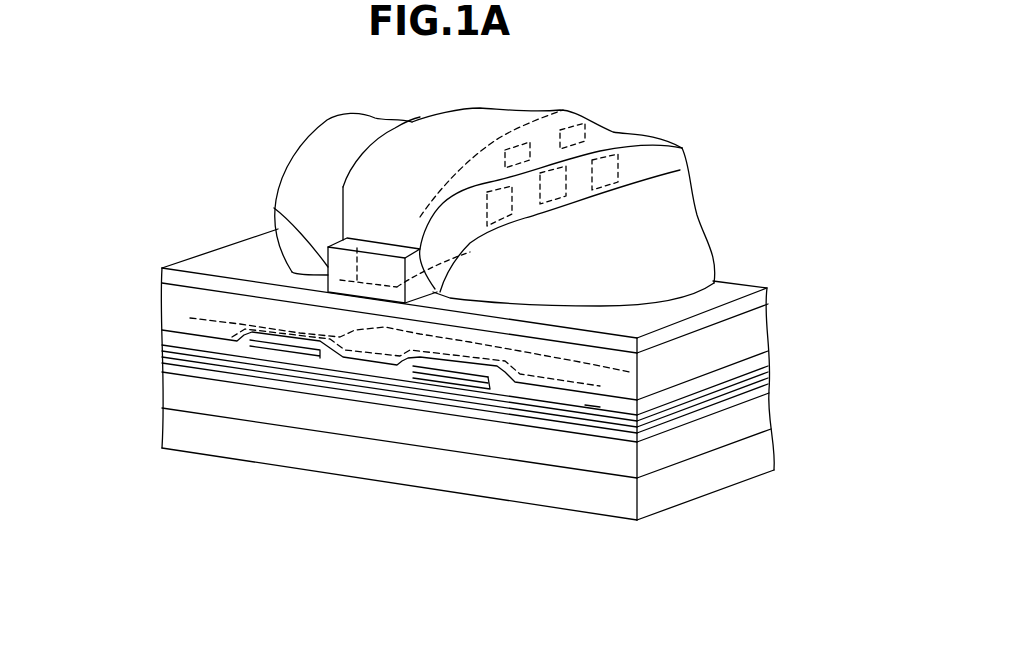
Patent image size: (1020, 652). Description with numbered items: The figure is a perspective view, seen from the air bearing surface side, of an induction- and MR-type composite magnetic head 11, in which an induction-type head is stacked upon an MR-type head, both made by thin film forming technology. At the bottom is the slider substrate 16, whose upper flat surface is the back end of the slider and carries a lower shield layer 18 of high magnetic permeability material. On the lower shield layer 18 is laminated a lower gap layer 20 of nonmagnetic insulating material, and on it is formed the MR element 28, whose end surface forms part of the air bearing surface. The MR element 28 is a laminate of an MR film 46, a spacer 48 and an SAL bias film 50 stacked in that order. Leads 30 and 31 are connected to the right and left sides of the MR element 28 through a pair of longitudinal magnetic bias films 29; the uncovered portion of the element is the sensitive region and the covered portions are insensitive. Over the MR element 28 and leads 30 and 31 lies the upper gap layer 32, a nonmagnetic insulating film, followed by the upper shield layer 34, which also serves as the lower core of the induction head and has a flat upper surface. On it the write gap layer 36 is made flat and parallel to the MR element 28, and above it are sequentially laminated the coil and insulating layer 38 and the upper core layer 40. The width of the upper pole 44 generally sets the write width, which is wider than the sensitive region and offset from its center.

The induction- and MR-type composite magnetic head 11 is at (692, 101).
The slider substrate 16 is at (185, 432).
The lower shield layer 18 is at (180, 393).
The lower gap layer 20 is at (162, 365).
The MR element 28 is at (348, 537).
The longitudinal magnetic bias films 29 is at (275, 372).
The lead 30 is at (590, 413).
The lead 31 is at (177, 341).
The upper gap layer 32 is at (177, 308).
The upper shield layer (upper shield—lower core layer) 34 is at (175, 283).
The write gap layer 36 is at (217, 282).
The coil and insulating layer 38 is at (627, 253).
The upper core layer 40 is at (684, 160).
The upper pole 44 is at (272, 207).
The MR film 46 is at (412, 408).
The spacer 48 is at (440, 397).
The SAL bias film 50 is at (470, 395).